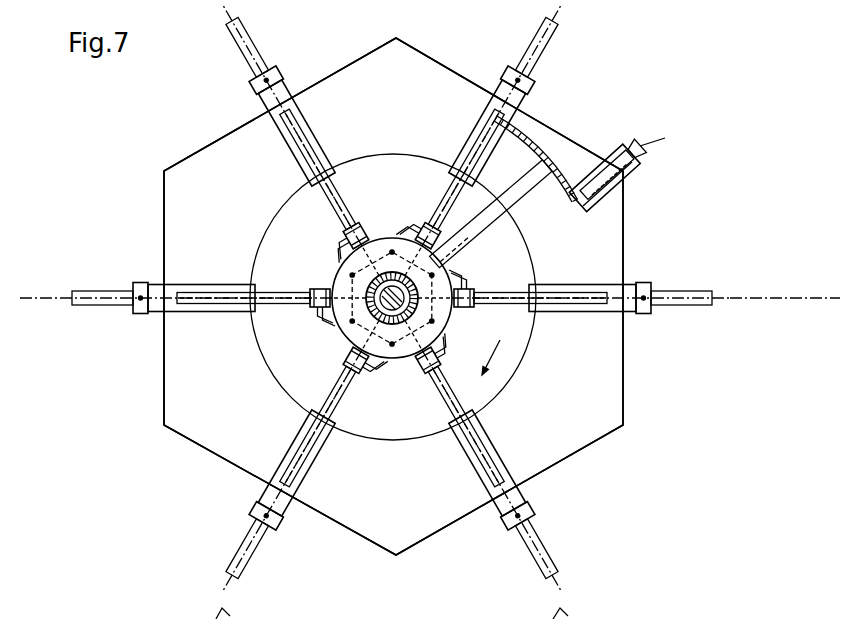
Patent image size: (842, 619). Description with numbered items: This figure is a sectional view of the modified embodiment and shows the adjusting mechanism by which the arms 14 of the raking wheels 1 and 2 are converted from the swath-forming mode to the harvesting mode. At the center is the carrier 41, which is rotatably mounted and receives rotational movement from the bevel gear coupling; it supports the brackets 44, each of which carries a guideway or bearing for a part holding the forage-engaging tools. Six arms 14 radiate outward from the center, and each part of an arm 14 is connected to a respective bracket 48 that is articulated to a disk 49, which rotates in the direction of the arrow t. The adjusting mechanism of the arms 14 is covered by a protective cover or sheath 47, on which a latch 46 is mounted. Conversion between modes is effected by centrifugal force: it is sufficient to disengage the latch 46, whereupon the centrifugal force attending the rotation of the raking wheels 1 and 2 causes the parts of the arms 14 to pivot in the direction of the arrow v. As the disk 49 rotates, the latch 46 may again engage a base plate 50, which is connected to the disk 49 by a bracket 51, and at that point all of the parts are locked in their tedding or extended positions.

The raking wheel 1 is at (492, 361).
The raking wheel 2 is at (206, 459).
The arm 14 is at (261, 59).
The carrier 41 is at (526, 336).
The bracket 44 is at (323, 160).
The latch 46 is at (584, 172).
The protective cover or sheath 47 is at (617, 376).
The bracket 48 is at (402, 221).
The disk 49 is at (376, 228).
The base plate 50 is at (571, 193).
The bracket 51 is at (488, 215).